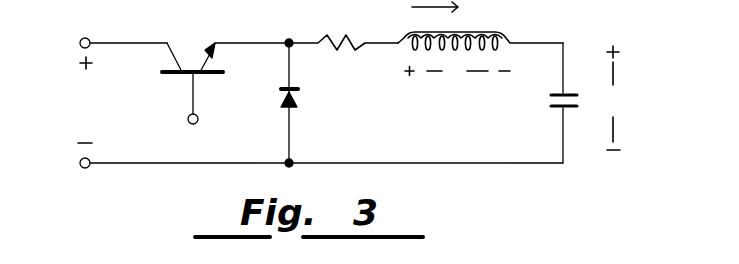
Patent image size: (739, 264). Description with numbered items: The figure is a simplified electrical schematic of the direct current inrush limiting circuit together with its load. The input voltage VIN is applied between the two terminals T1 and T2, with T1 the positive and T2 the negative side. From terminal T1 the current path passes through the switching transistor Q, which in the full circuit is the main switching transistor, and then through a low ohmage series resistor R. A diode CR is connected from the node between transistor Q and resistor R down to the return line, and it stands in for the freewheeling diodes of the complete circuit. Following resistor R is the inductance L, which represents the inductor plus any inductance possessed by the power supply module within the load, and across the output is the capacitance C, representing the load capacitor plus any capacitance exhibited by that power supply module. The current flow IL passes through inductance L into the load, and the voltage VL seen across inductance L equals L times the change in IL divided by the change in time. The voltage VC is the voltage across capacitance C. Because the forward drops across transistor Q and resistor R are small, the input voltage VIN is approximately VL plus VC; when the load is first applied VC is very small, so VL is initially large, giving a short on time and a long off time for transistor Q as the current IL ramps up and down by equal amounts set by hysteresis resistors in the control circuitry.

The terminal T1 is at (107, 44).
The terminal T2 is at (307, 164).
The input voltage VIN is at (82, 100).
The transistor Q is at (225, 73).
The diode CR is at (306, 103).
The resistor R is at (343, 31).
The inductance L is at (480, 31).
The current flow IL is at (422, 9).
The voltage across inductance VL is at (457, 73).
The capacitance C is at (557, 103).
The voltage across capacitance VC is at (612, 98).